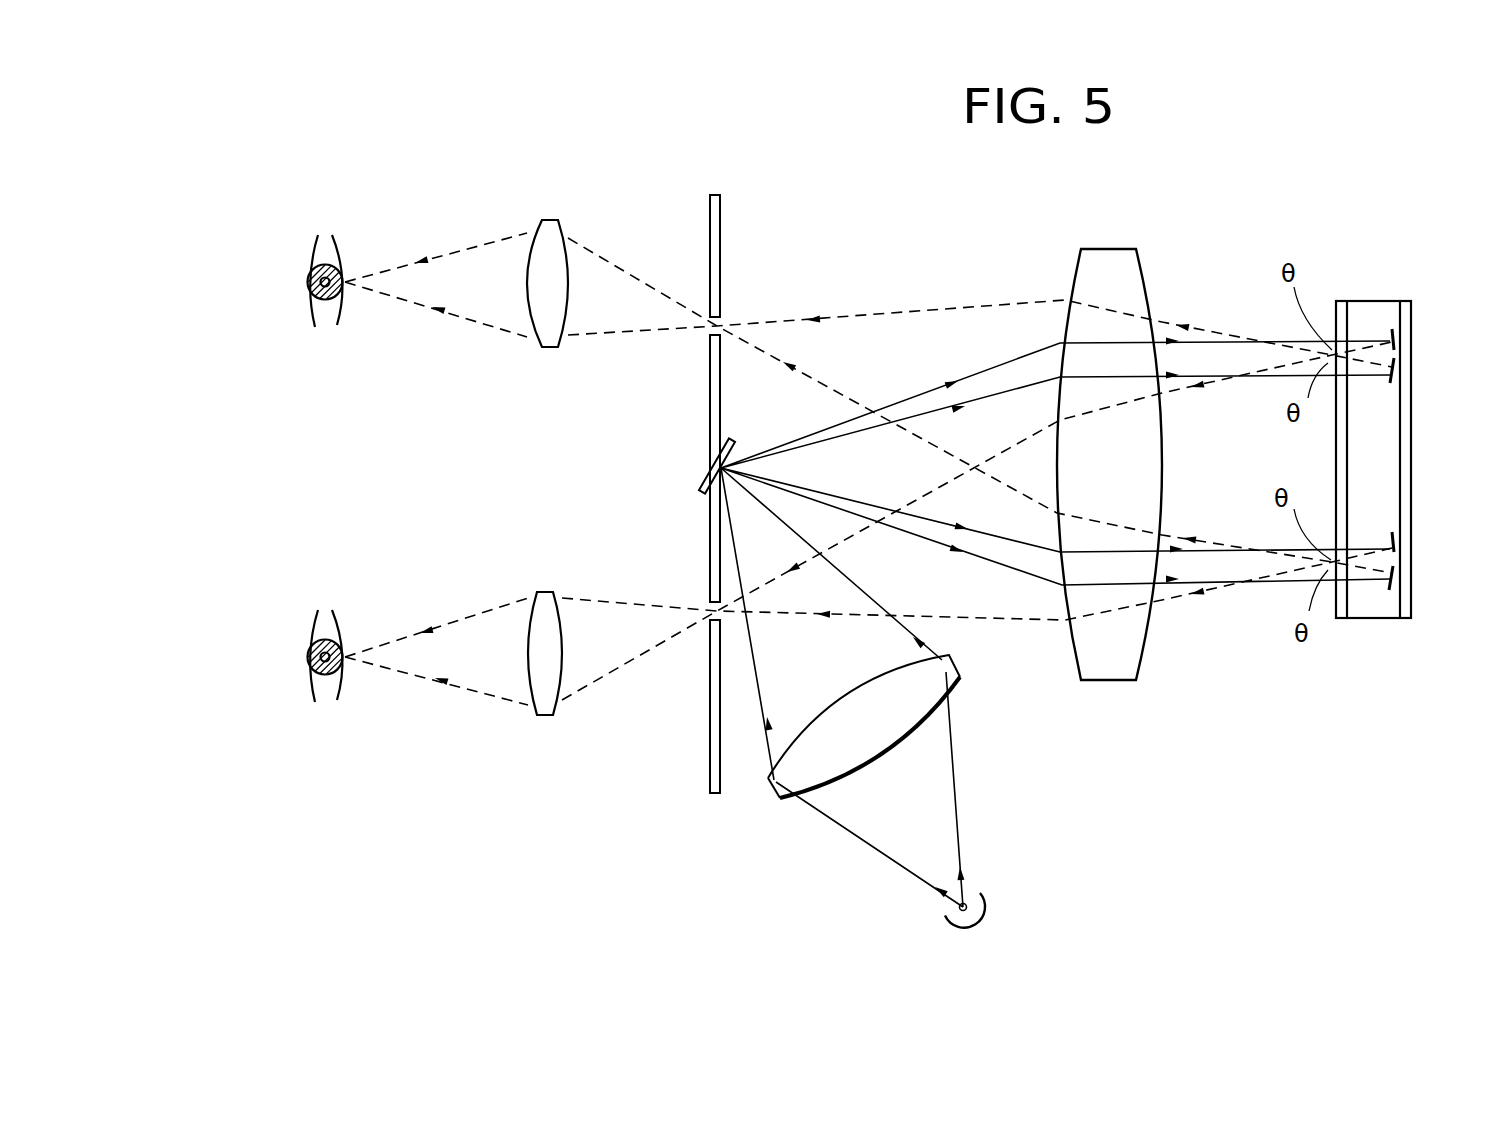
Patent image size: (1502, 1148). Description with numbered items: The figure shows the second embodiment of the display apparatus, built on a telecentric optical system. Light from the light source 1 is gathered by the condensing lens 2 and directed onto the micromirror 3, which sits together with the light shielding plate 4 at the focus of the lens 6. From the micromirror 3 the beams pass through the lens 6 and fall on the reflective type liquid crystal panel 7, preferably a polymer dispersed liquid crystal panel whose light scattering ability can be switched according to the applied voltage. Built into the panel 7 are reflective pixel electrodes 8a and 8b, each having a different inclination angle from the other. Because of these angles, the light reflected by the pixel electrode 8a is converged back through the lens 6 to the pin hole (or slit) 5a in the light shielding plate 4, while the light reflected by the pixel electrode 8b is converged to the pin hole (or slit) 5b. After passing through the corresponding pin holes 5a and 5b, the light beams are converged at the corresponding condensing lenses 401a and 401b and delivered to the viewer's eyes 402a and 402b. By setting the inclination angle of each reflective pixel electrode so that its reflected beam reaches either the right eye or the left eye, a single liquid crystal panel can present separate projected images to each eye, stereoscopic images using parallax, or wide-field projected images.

The light source 1 is at (984, 908).
The condensing lens 2 is at (963, 678).
The micromirror 3 is at (703, 483).
The light shielding plate 4 is at (723, 232).
The pin hole (or slit) 5a is at (707, 332).
The pin hole (or slit) 5b is at (708, 603).
The lens 6 is at (1134, 280).
The reflective type liquid crystal panel 7 is at (1385, 306).
The reflective pixel electrode 8a is at (1400, 368).
The reflective pixel electrode 8b is at (1400, 330).
The condensing lens 401a is at (545, 224).
The condensing lens 401b is at (550, 706).
The viewer's eye 402a is at (309, 287).
The viewer's eye 402b is at (310, 673).